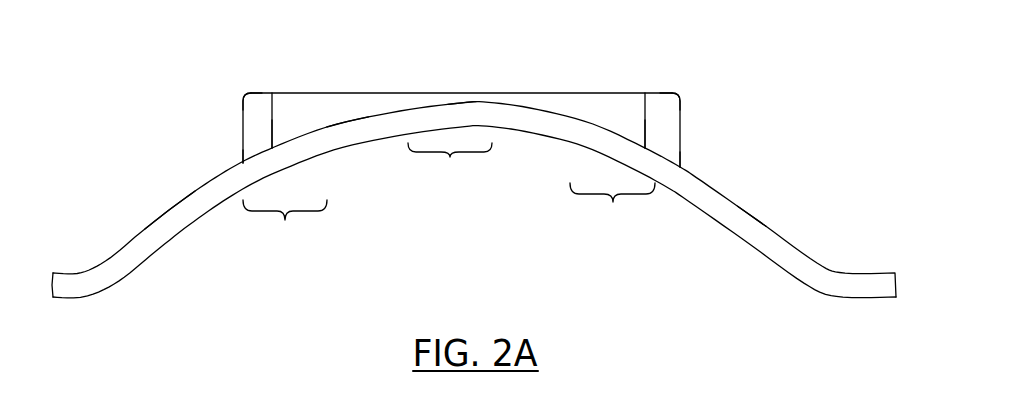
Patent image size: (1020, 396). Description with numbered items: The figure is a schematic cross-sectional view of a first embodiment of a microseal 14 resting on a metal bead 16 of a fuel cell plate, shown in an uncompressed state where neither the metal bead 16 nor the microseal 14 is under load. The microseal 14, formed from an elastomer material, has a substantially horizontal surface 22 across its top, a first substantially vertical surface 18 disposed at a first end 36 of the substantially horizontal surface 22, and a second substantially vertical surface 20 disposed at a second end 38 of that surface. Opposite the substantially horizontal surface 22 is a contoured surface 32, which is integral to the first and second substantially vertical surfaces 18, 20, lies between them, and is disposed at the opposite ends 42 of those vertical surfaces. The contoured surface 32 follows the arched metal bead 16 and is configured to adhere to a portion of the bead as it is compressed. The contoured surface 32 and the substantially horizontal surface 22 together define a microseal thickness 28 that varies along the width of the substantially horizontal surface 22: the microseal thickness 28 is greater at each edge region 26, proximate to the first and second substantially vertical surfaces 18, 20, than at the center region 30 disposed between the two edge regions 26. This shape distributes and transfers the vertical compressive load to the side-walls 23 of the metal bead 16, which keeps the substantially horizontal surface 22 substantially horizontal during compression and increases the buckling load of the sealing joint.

The microseal 14 is at (476, 110).
The metal bead 16 is at (788, 244).
The first substantially vertical surface 18 is at (242, 113).
The second substantially vertical surface 20 is at (683, 148).
The substantially horizontal surface 22 is at (582, 92).
The side-walls 23 is at (187, 200).
The edge region 26 is at (449, 218).
The microseal thickness 28 is at (273, 113).
The center region 30 is at (450, 168).
The contoured surface 32 is at (353, 124).
The first end 36 is at (263, 92).
The second end 38 is at (660, 92).
The opposite ends 42 is at (248, 152).